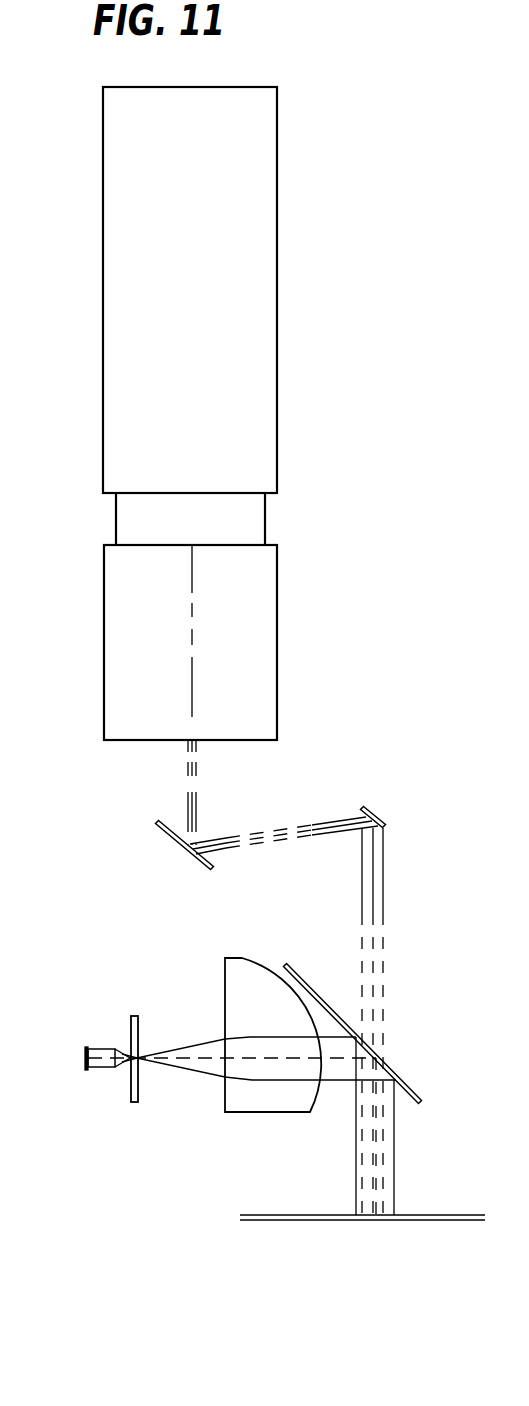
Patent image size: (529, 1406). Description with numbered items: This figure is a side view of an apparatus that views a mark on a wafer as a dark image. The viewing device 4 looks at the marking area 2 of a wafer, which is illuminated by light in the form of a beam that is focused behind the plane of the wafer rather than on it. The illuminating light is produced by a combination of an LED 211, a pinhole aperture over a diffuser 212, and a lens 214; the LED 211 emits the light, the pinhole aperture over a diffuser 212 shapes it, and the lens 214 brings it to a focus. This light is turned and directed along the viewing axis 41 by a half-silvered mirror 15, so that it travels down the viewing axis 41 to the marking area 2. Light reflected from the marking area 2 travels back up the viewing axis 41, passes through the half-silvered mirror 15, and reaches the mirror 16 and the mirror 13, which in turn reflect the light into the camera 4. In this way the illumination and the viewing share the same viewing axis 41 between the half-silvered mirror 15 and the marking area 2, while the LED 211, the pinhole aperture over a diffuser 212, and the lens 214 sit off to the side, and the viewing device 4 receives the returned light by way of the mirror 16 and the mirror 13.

The marking area 2 is at (367, 1221).
The viewing device 4 is at (262, 322).
The mirror 13 is at (182, 842).
The half-silvered mirror 15 is at (420, 1090).
The mirror 16 is at (386, 812).
The viewing axis 41 is at (190, 779).
The LED 211 is at (100, 1070).
The pinhole aperture over a diffuser 212 is at (130, 1088).
The lens 214 is at (232, 995).